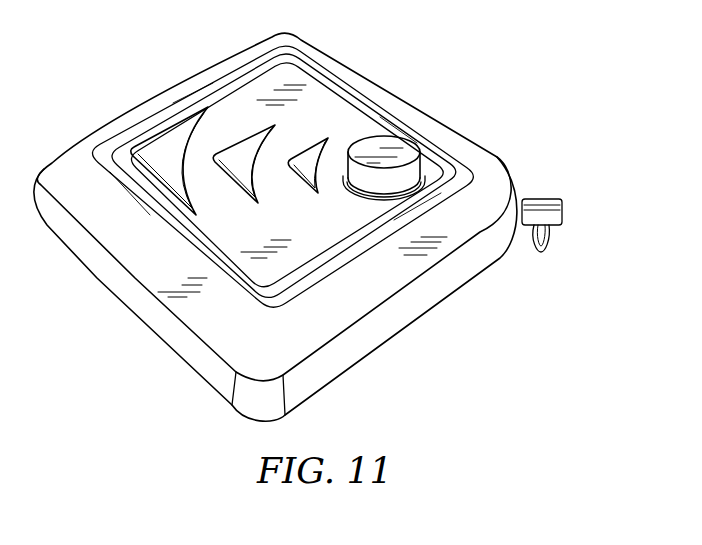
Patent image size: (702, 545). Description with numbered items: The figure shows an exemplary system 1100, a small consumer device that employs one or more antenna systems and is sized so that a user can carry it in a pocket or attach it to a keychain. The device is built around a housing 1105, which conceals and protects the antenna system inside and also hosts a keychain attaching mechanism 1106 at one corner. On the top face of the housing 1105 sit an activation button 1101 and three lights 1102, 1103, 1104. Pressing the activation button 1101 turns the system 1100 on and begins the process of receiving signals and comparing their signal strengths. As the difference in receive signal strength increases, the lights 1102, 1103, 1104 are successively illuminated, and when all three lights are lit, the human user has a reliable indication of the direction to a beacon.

The system 1100 is at (553, 78).
The activation button 1101 is at (390, 150).
The light 1102 is at (304, 160).
The light 1103 is at (241, 148).
The light 1104 is at (152, 150).
The housing 1105 is at (386, 327).
The keychain attaching mechanism 1106 is at (548, 252).